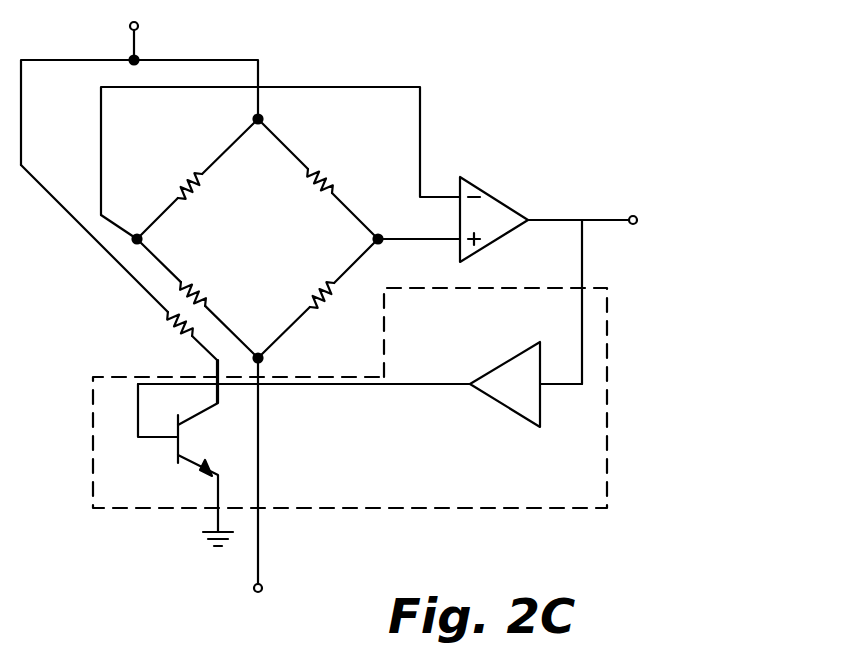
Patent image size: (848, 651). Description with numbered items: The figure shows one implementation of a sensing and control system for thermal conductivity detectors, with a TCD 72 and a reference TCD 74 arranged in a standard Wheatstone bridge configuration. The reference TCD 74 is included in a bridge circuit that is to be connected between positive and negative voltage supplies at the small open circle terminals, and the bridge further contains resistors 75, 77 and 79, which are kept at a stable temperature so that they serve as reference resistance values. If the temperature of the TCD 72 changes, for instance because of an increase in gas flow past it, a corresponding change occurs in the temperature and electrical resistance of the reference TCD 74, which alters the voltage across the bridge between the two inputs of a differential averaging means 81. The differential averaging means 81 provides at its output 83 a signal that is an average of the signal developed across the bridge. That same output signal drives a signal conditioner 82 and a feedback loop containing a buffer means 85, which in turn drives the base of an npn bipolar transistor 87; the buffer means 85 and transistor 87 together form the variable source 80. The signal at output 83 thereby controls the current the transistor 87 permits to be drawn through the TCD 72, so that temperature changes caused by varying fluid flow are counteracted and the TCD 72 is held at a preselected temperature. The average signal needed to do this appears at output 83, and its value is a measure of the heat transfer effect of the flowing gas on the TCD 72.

The TCD 72 is at (172, 328).
The reference TCD 74 is at (195, 290).
The resistor 75 is at (193, 176).
The resistor 77 is at (320, 178).
The resistor 79 is at (324, 286).
The variable source 80 is at (607, 405).
The differential averaging means 81 is at (499, 198).
The signal conditioner 82 is at (740, 238).
The output 83 is at (633, 216).
The buffer amplifier 85 is at (510, 358).
The npn bipolar transistor 87 is at (226, 446).